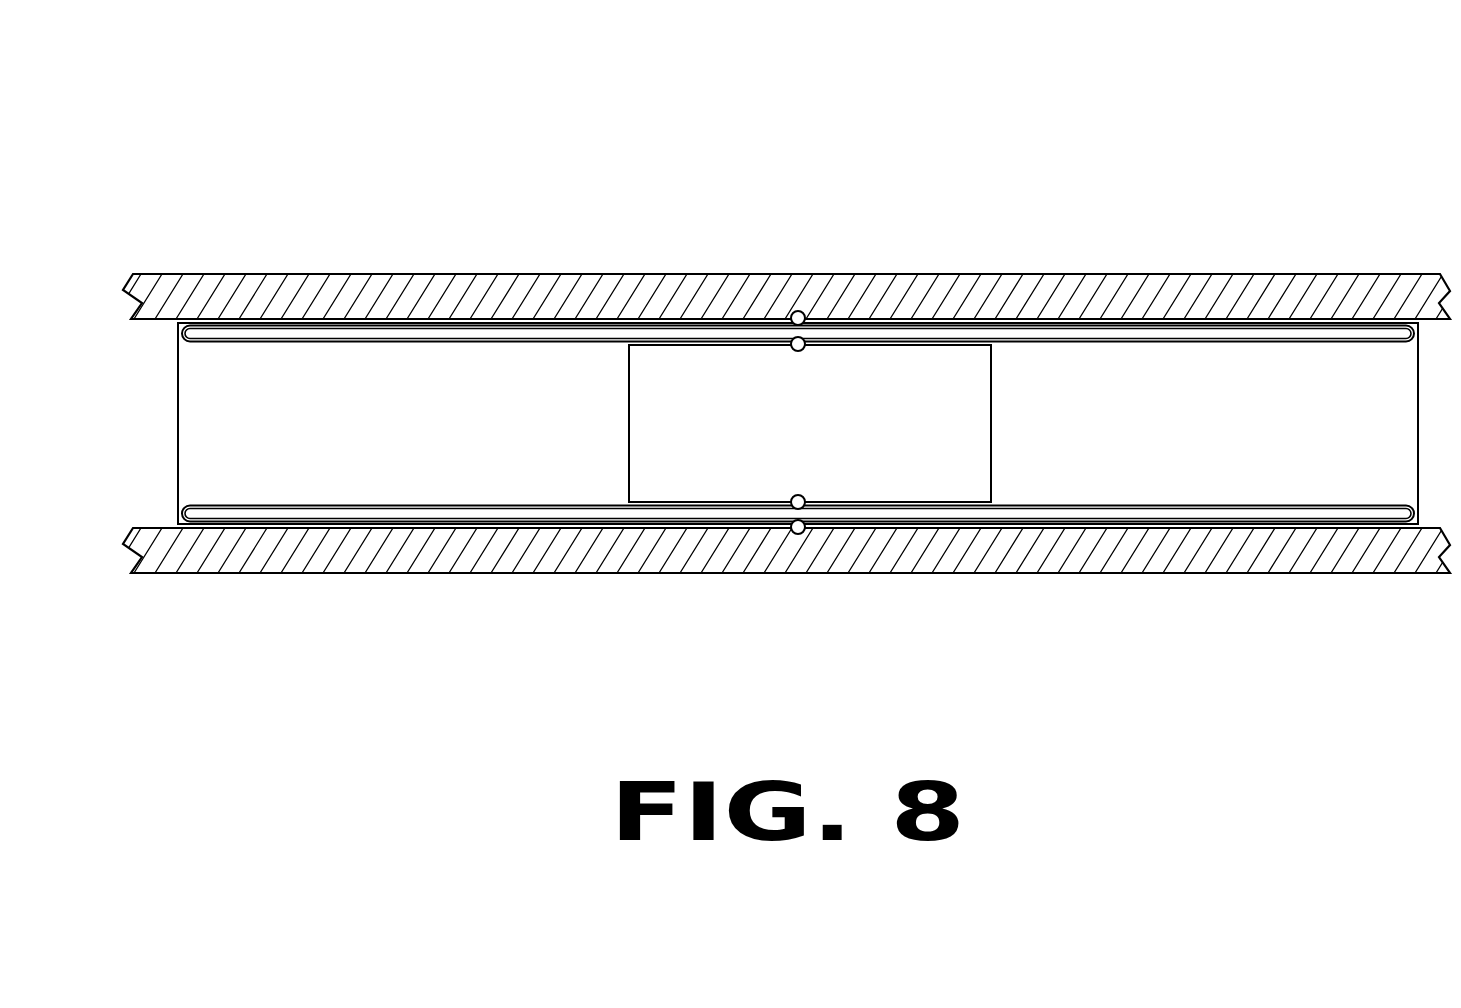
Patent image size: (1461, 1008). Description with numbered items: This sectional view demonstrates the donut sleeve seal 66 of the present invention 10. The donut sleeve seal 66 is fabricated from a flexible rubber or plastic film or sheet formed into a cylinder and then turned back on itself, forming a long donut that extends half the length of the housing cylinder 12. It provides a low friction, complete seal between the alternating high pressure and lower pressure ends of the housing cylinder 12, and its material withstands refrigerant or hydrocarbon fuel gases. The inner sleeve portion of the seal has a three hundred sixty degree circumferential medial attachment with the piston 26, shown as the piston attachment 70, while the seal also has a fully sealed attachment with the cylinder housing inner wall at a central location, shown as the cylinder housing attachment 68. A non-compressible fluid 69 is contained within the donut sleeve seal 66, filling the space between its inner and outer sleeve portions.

The present invention 10 is at (1060, 168).
The housing cylinder 12 is at (1177, 272).
The piston 26 is at (992, 468).
The donut sleeve seal 66 is at (540, 342).
The cylinder housing attachment 68 is at (792, 312).
The non-compressible fluid 69 is at (1152, 513).
The piston attachment 70 is at (805, 338).